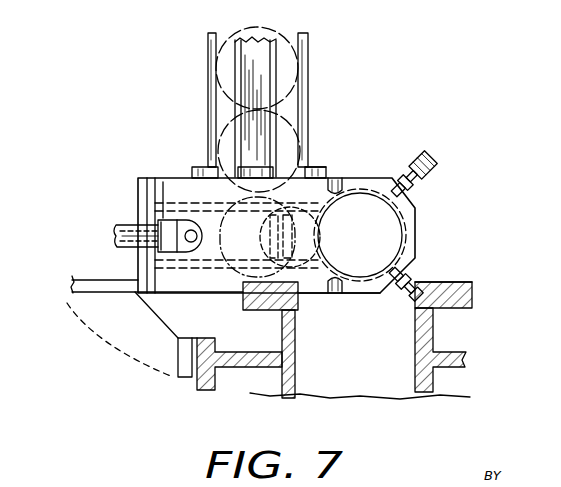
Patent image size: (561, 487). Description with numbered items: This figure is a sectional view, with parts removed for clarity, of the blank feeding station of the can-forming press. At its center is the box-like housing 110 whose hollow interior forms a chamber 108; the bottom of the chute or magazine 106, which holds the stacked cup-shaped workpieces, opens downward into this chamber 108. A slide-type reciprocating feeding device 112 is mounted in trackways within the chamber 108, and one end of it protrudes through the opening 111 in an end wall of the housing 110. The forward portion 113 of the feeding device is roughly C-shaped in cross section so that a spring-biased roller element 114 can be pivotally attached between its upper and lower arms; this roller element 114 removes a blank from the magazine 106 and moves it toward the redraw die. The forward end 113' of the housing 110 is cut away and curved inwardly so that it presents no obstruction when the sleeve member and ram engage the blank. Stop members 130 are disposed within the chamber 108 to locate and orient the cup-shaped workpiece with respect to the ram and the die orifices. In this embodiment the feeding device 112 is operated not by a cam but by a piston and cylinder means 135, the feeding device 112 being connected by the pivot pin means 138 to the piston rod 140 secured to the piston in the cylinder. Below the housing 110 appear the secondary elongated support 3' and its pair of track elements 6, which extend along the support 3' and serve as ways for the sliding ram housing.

The chute or magazine 106 is at (307, 93).
The forward portion of the feeding device 113 is at (308, 190).
The chamber 108 is at (322, 172).
The box-like housing 110 is at (352, 178).
The stop members 130 is at (418, 205).
The roller element 114 is at (318, 247).
The secondary elongated support 3' is at (445, 270).
The track elements 6 is at (298, 302).
The forward end of housing 113' is at (346, 319).
The feeding device 112 is at (200, 266).
The piston rod 140 is at (122, 248).
The piston and cylinder means 135 is at (122, 215).
The opening 111 is at (163, 182).
The pivot pin means 138 is at (178, 226).